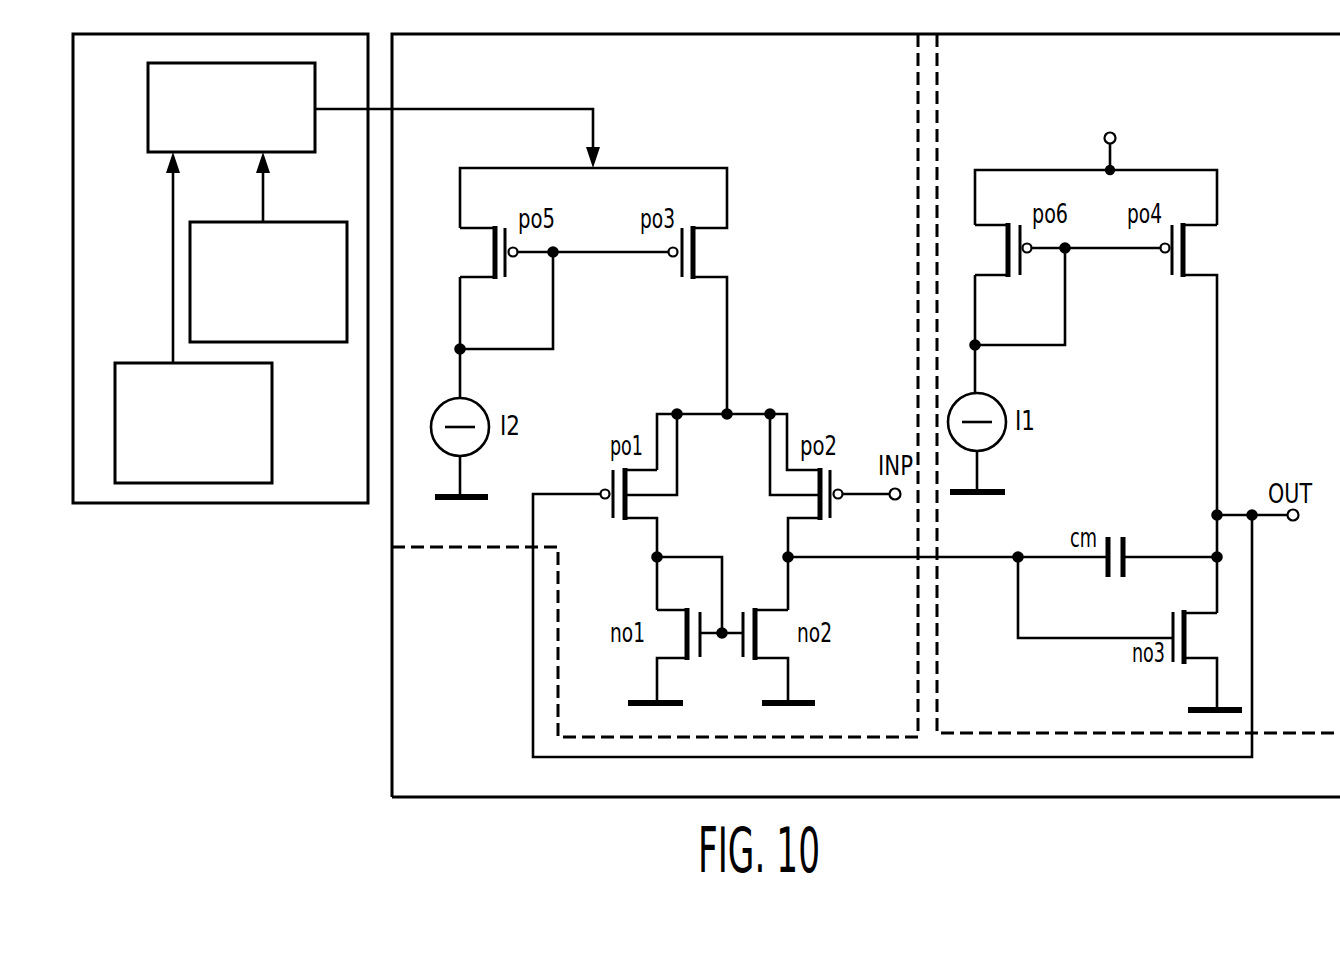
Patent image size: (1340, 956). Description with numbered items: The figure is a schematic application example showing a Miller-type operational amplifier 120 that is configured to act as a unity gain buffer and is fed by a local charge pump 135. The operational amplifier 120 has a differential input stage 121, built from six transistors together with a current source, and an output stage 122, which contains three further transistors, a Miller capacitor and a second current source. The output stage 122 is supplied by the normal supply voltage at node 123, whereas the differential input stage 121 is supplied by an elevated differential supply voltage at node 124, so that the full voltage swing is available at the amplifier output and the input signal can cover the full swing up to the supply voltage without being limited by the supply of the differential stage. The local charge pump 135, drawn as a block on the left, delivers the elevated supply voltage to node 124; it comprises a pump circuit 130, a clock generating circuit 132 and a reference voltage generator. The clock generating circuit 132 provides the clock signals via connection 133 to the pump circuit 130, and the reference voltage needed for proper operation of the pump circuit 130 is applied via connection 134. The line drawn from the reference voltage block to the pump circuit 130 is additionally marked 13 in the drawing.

The reference voltage signal line 13 is at (267, 187).
The Miller-type operational amplifier 120 is at (1207, 797).
The differential input stage 121 is at (438, 550).
The output stage 122 is at (1295, 733).
The node 123 is at (1178, 170).
The node 124 is at (596, 113).
The pump circuit 130 is at (247, 137).
The clock generating circuit 132 is at (205, 468).
The connection 133 is at (170, 247).
The connection 134 is at (283, 325).
The local charge pump 135 is at (320, 503).